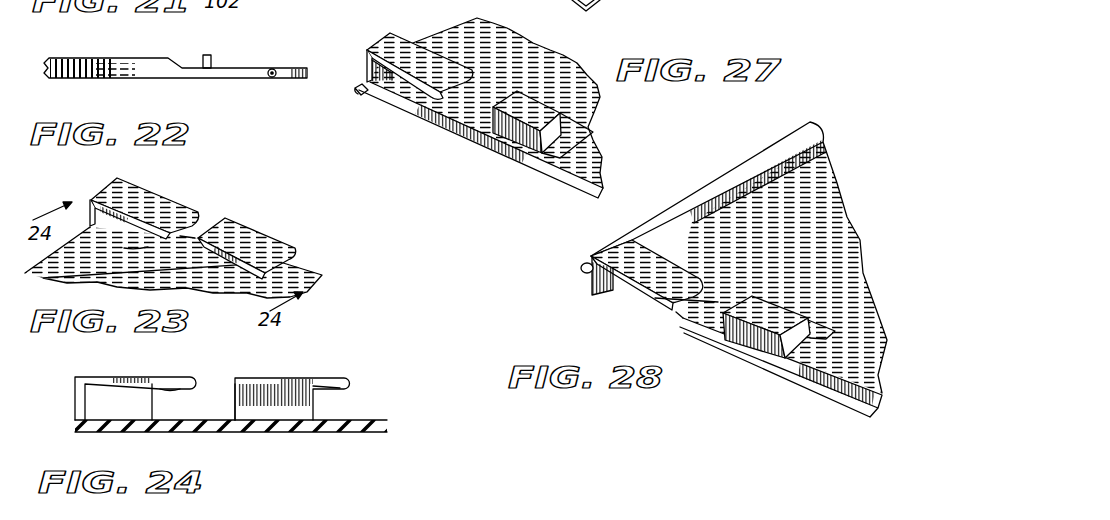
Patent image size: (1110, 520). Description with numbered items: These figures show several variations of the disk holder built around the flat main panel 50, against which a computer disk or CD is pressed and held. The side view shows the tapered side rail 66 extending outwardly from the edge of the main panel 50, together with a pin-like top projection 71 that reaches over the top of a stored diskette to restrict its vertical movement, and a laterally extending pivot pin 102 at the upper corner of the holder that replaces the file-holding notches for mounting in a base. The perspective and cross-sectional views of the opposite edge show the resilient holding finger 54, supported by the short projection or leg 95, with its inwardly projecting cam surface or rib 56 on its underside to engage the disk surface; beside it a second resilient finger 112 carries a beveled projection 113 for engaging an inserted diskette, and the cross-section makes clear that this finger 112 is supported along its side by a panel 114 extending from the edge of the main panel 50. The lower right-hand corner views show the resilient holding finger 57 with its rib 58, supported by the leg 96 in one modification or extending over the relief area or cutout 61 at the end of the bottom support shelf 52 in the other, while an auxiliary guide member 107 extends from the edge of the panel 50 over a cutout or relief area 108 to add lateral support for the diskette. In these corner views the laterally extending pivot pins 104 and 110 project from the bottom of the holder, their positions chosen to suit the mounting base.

In FIG. 22, the main panel 50 is at (288, 68).
In FIG. 23, the main panel 50 is at (297, 277).
In FIG. 24, the main panel 50 is at (227, 432).
In FIG. 27, the main panel 50 is at (592, 152).
In FIG. 28, the main panel 50 is at (827, 208).
In FIG. 28, the bottom support projection or shelf 52 is at (815, 136).
In FIG. 23, the resilient holding finger 54 is at (137, 206).
In FIG. 24, the resilient holding finger 54 is at (113, 383).
In FIG. 23, the cam surface or rib 56 is at (157, 236).
In FIG. 24, the cam surface or rib 56 is at (160, 392).
In FIG. 27, the resilient holding finger 57 is at (401, 54).
In FIG. 28, the resilient holding finger 57 is at (632, 275).
In FIG. 28, the cam surface or rib 58 is at (667, 300).
In FIG. 28, the relief area or cutout 61 is at (683, 318).
In FIG. 22, the tapered side rail 66 is at (115, 60).
In FIG. 22, the pin-like top projection 71 is at (212, 57).
In FIG. 23, the projection or leg 95 is at (92, 200).
In FIG. 24, the projection or leg 95 is at (75, 390).
In FIG. 27, the projection or leg 96 is at (363, 62).
In FIG. 22, the pivot pin 102 is at (275, 79).
In FIG. 27, the laterally extending pin 104 is at (360, 95).
In FIG. 27, the auxiliary guide member 107 is at (520, 157).
In FIG. 28, the auxiliary guide member 107 is at (763, 358).
In FIG. 27, the cutout or relief area 108 is at (577, 135).
In FIG. 28, the cutout or relief area 108 is at (828, 352).
In FIG. 28, the laterally extending pin 110 is at (582, 269).
In FIG. 23, the second resilient finger 112 is at (248, 238).
In FIG. 24, the second resilient finger 112 is at (337, 378).
In FIG. 24, the beveled projection 113 is at (338, 391).
In FIG. 24, the panel 114 is at (236, 398).